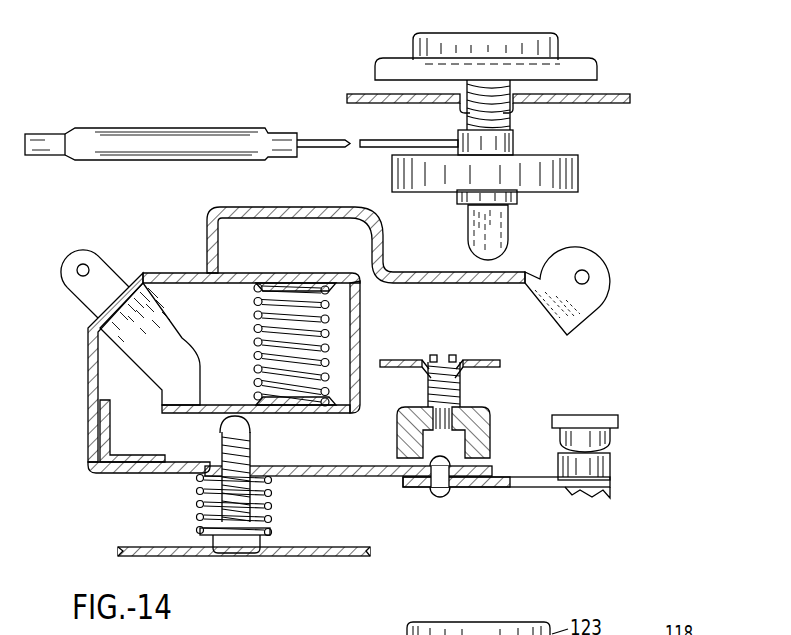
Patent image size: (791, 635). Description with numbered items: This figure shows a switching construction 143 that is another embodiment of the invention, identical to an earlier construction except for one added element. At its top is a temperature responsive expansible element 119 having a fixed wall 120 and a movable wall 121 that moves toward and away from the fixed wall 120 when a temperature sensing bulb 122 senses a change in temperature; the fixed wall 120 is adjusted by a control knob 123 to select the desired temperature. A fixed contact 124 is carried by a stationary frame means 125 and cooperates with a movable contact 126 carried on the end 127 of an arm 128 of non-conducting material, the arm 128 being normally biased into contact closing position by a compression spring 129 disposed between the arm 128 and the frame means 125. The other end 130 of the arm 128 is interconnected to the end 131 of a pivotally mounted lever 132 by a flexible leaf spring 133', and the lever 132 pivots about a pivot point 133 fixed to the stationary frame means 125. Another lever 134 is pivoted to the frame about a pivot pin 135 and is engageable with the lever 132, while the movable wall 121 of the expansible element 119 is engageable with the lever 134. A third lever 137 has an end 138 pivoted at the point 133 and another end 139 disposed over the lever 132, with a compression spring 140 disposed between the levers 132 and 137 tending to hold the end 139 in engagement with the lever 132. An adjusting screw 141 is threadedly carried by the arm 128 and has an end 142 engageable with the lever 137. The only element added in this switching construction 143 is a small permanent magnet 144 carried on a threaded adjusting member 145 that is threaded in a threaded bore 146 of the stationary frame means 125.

The temperature responsive expansible element 119 is at (578, 179).
The fixed wall 120 is at (514, 143).
The movable wall 121 is at (500, 236).
The temperature sensing bulb 122 is at (188, 137).
The control knob 123 is at (558, 39).
The fixed contact 124 is at (612, 432).
The stationary frame means 125 is at (607, 103).
The movable contact 126 is at (612, 470).
The end of arm 127 is at (545, 490).
The arm 128 is at (341, 477).
The compression spring 129 is at (270, 506).
The other end of arm 130 is at (122, 476).
The end of lever 131 is at (88, 433).
The pivotally mounted lever 132 is at (236, 346).
The pivot point 133 is at (106, 245).
The flexible leaf spring 133' is at (132, 431).
The lever 134 is at (396, 283).
The pivot pin 135 is at (590, 277).
The third lever 137 is at (346, 418).
The end of third lever 138 is at (112, 260).
The other end of third lever 139 is at (328, 271).
The compression spring 140 is at (257, 331).
The adjusting screw 141 is at (251, 441).
The end of adjusting screw 142 is at (236, 415).
The switching construction 143 is at (636, 53).
The permanent magnet 144 is at (480, 421).
The threaded adjusting member 145 is at (465, 385).
The threaded bore 146 is at (462, 366).